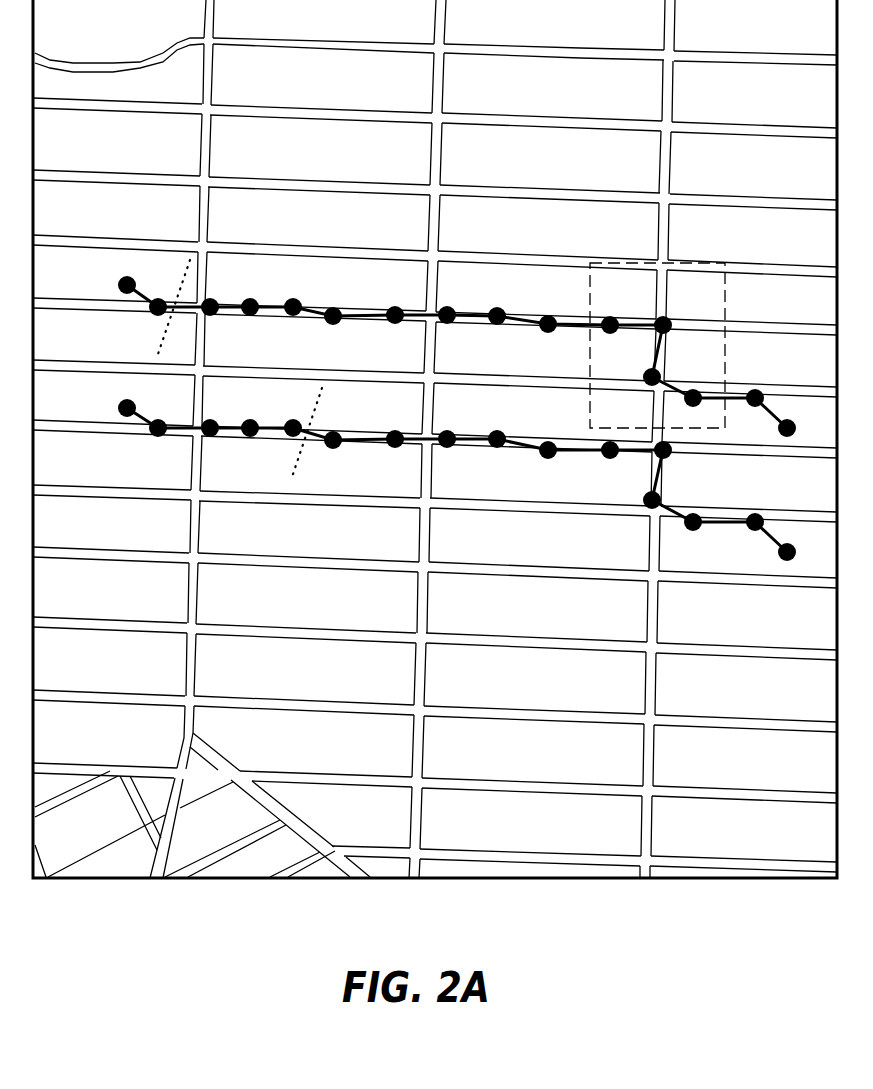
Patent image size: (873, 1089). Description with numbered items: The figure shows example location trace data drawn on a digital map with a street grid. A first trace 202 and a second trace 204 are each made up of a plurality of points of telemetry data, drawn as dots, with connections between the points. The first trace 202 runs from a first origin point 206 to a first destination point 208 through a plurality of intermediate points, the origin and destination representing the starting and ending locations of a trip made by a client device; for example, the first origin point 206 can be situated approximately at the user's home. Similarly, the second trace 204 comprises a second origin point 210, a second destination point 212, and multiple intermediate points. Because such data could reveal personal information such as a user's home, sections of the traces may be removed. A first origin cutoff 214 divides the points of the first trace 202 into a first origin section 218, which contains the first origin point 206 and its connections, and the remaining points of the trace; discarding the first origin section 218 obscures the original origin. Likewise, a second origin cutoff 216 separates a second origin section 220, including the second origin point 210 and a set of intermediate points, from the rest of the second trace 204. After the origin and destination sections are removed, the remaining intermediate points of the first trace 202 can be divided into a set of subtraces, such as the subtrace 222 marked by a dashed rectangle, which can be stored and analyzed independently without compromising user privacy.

The first trace 202 is at (436, 316).
The second trace 204 is at (437, 443).
The first origin point 206 is at (108, 268).
The first destination point 208 is at (793, 403).
The second origin point 210 is at (106, 414).
The second destination point 212 is at (797, 527).
The first origin cutoff 214 is at (200, 268).
The second origin cutoff 216 is at (280, 480).
The first origin section 218 is at (120, 267).
The second origin section 220 is at (302, 402).
The subtrace 222 is at (708, 245).